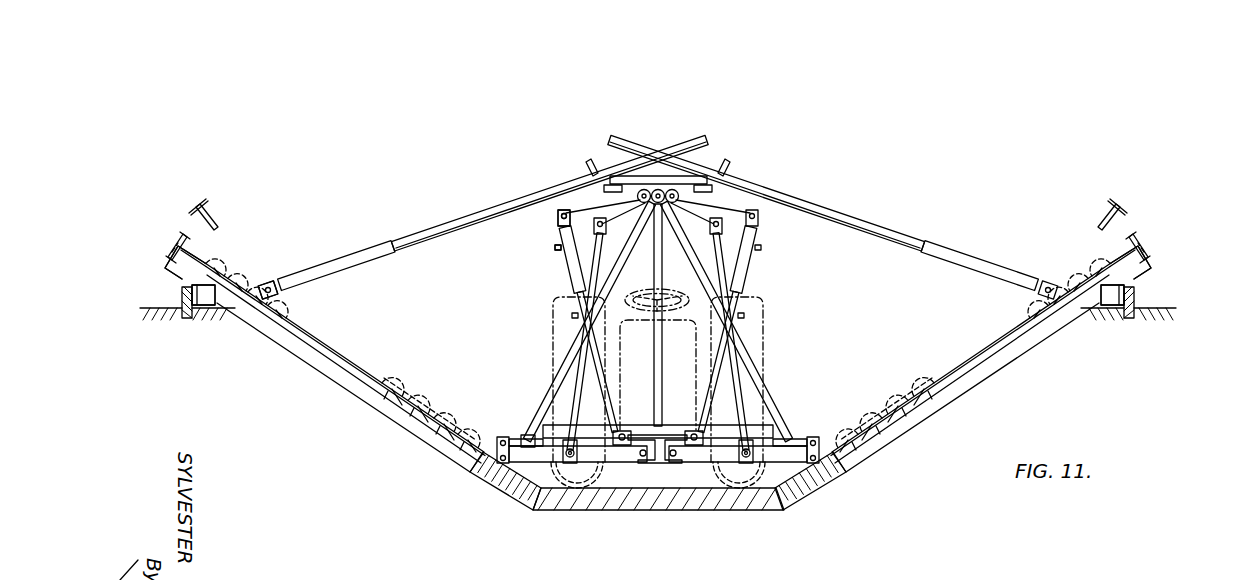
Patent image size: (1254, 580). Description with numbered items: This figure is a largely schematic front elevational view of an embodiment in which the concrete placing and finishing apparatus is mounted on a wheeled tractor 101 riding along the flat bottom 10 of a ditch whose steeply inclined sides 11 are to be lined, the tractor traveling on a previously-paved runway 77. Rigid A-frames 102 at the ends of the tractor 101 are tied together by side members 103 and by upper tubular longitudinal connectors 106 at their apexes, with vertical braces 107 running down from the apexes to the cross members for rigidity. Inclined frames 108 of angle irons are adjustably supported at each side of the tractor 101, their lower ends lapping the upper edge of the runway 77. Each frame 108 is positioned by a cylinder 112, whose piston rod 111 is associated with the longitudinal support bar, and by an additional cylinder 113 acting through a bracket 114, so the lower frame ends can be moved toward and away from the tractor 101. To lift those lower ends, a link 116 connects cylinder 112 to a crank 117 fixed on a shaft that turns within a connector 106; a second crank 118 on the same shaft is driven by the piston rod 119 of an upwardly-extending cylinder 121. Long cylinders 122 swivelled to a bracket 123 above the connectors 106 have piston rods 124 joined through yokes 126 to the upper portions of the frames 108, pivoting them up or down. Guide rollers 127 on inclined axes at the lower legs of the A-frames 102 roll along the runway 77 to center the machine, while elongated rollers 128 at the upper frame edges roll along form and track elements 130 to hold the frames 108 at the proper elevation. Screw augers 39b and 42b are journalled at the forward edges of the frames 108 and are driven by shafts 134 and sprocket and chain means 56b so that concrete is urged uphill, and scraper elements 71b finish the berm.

The flat bottom 10 is at (655, 523).
The inclined sides 11 is at (346, 392).
The screw auger 39b is at (445, 352).
The screw auger 42b is at (895, 383).
The sprocket and chain means 56b is at (180, 238).
The scraper elements 71b is at (210, 310).
The runway 77 is at (780, 509).
The tractor 101 is at (768, 328).
The A-frames 102 is at (566, 369).
The side members 103 is at (526, 436).
The upper tubular longitudinal connectors 106 is at (644, 271).
The vertical braces 107 is at (646, 364).
The inclined frames 108 is at (492, 446).
The piston rod 111 is at (534, 486).
The cylinder 112 is at (631, 455).
The additional cylinder 113 is at (707, 450).
The bracket 114 is at (820, 433).
The link 116 is at (597, 268).
The crank 117 is at (616, 212).
The second crank 118 is at (557, 217).
The piston rod 119 is at (556, 248).
The cylinder 121 is at (562, 327).
The long cylinders 122 is at (400, 238).
The bracket 123 is at (644, 174).
The piston rod 124 is at (658, 217).
The yoke 126 is at (270, 282).
The guide rollers 127 is at (523, 478).
The elongated rollers 128 is at (178, 279).
The form and track elements 130 is at (187, 318).
The shafts 134 is at (212, 212).